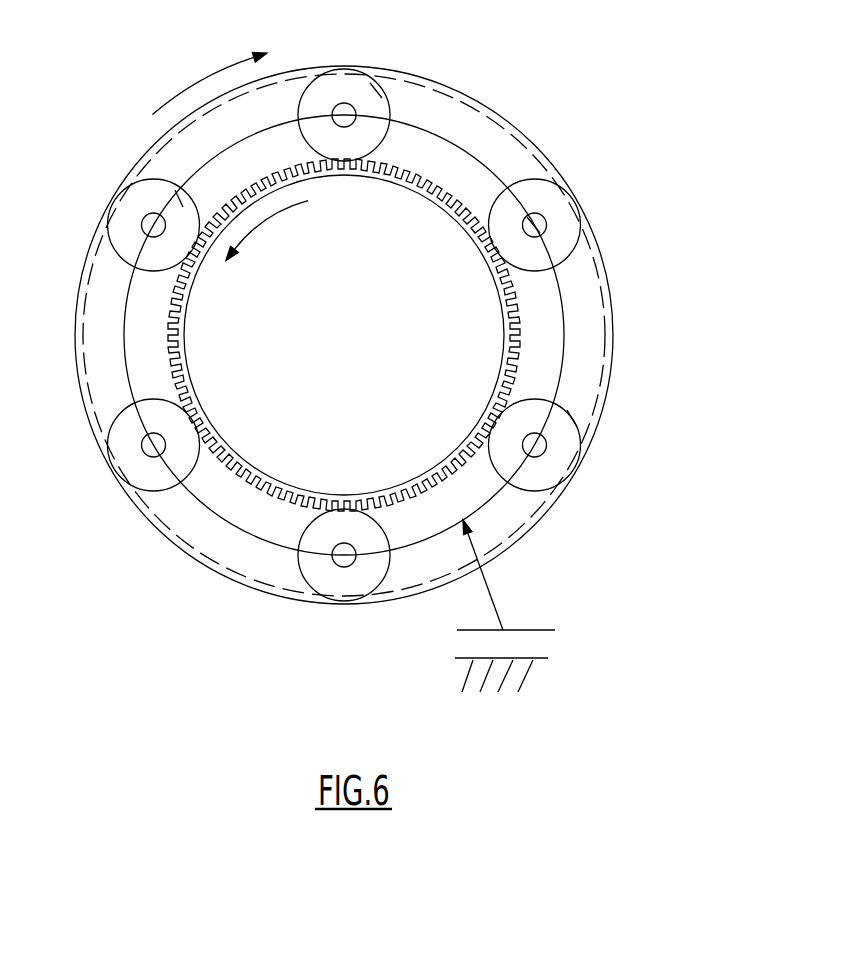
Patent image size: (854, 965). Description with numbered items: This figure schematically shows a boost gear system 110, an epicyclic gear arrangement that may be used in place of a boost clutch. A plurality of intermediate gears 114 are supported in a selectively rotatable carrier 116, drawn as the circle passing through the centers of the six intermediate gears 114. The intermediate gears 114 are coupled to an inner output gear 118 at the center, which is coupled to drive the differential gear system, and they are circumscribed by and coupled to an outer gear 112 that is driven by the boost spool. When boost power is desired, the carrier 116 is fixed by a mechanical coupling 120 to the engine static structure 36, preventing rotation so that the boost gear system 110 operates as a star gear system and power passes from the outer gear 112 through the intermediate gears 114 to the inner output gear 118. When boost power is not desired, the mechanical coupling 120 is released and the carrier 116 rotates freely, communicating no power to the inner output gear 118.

The boost gear system 110 is at (630, 81).
The outer gear 112 is at (502, 112).
The intermediate gears 114 is at (568, 446).
The carrier 116 is at (611, 313).
The inner output gear 118 is at (228, 447).
The mechanical coupling 120 is at (560, 616).
The engine static structure 36 is at (527, 675).